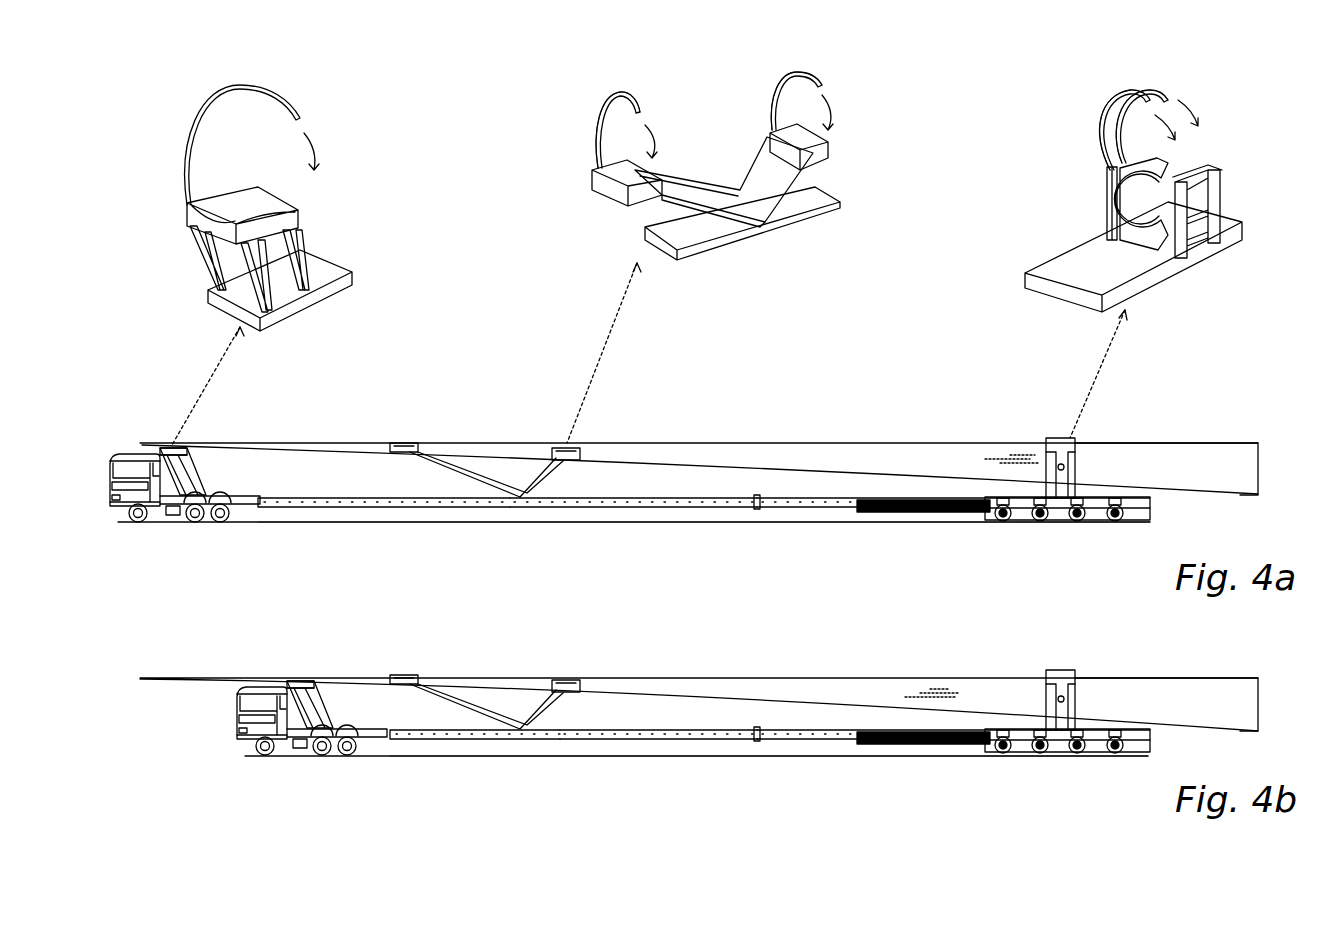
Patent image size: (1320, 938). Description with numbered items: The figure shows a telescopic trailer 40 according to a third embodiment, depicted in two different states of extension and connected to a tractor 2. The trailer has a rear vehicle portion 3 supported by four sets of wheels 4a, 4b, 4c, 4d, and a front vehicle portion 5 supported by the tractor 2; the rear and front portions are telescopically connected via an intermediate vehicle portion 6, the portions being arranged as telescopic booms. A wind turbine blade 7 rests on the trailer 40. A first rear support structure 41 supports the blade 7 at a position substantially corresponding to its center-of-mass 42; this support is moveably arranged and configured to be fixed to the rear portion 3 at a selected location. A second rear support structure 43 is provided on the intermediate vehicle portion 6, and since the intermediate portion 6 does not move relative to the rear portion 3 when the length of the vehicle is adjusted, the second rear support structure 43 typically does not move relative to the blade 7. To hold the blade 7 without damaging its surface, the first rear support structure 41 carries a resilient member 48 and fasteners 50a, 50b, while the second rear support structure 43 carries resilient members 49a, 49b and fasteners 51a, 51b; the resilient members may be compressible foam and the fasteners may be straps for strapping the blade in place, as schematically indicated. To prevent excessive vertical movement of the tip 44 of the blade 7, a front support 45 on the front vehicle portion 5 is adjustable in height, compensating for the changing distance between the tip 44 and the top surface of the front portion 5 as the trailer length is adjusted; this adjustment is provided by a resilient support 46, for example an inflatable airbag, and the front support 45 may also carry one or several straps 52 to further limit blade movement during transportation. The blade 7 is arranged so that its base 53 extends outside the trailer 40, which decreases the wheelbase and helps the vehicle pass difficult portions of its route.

In FIG. 4A, the tractor 2 is at (124, 454).
In FIG. 4B, the tractor 2 is at (240, 728).
In FIG. 4A, the rear vehicle portion 3 is at (905, 512).
In FIG. 4B, the rear vehicle portion 3 is at (875, 745).
In FIG. 4A, the set of wheels 4a is at (1003, 521).
In FIG. 4B, the set of wheels 4a is at (1003, 753).
In FIG. 4A, the set of wheels 4b is at (1040, 521).
In FIG. 4B, the set of wheels 4b is at (1040, 753).
In FIG. 4A, the set of wheels 4c is at (1077, 521).
In FIG. 4B, the set of wheels 4c is at (1077, 753).
In FIG. 4A, the set of wheels 4d is at (1115, 521).
In FIG. 4B, the set of wheels 4d is at (1115, 753).
In FIG. 4A, the front vehicle portion 5 is at (383, 504).
In FIG. 4B, the front vehicle portion 5 is at (471, 738).
In FIG. 4A, the intermediate vehicle portion 6 is at (626, 504).
In FIG. 4B, the intermediate vehicle portion 6 is at (642, 740).
In FIG. 4A, the wind turbine blade 7 is at (950, 463).
In FIG. 4B, the wind turbine blade 7 is at (912, 698).
In FIG. 4A, the telescopic trailer 40 is at (737, 528).
In FIG. 4B, the telescopic trailer 40 is at (757, 776).
In FIG. 4A, the first rear support structure 41 is at (1063, 447).
In FIG. 4B, the first rear support structure 41 is at (1056, 672).
In FIG. 4A, the center-of-mass 42 is at (1065, 467).
In FIG. 4B, the center-of-mass 42 is at (1065, 699).
In FIG. 4A, the second rear support structure 43 is at (479, 466).
In FIG. 4B, the second rear support structure 43 is at (479, 700).
In FIG. 4A, the tip 44 is at (146, 442).
In FIG. 4B, the tip 44 is at (152, 676).
In FIG. 4A, the front support 45 is at (197, 466).
In FIG. 4B, the front support 45 is at (322, 708).
In FIG. 4A, the resilient support 46 is at (173, 448).
In FIG. 4B, the resilient support 46 is at (304, 680).
In FIG. 4A, the resilient member 48 is at (1160, 240).
In FIG. 4A, the resilient member 49a is at (818, 150).
In FIG. 4A, the resilient member 49b is at (610, 182).
In FIG. 4A, the fastener 50a is at (1152, 82).
In FIG. 4A, the fastener 50b is at (1118, 94).
In FIG. 4A, the fastener 51a is at (780, 82).
In FIG. 4A, the fastener 51b is at (604, 96).
In FIG. 4A, the strap 52 is at (281, 100).
In FIG. 4A, the base 53 is at (1225, 455).
In FIG. 4B, the base 53 is at (1225, 705).